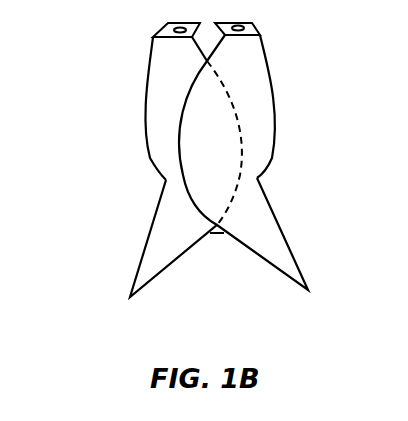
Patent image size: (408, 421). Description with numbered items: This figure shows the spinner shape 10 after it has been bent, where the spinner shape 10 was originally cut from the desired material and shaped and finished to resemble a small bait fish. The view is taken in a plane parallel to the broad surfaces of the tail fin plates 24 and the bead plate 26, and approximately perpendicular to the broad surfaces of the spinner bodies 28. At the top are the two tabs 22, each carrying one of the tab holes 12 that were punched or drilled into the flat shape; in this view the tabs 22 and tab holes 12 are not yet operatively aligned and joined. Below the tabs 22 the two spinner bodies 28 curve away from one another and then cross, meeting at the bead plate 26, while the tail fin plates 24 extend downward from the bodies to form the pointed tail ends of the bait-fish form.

The spinner shape 10 is at (131, 162).
The tab holes 12 is at (167, 29).
The tabs 22 is at (154, 39).
The spinner bodies 28 is at (150, 104).
The tail fin plates 24 is at (168, 264).
The bead plate 26 is at (217, 234).